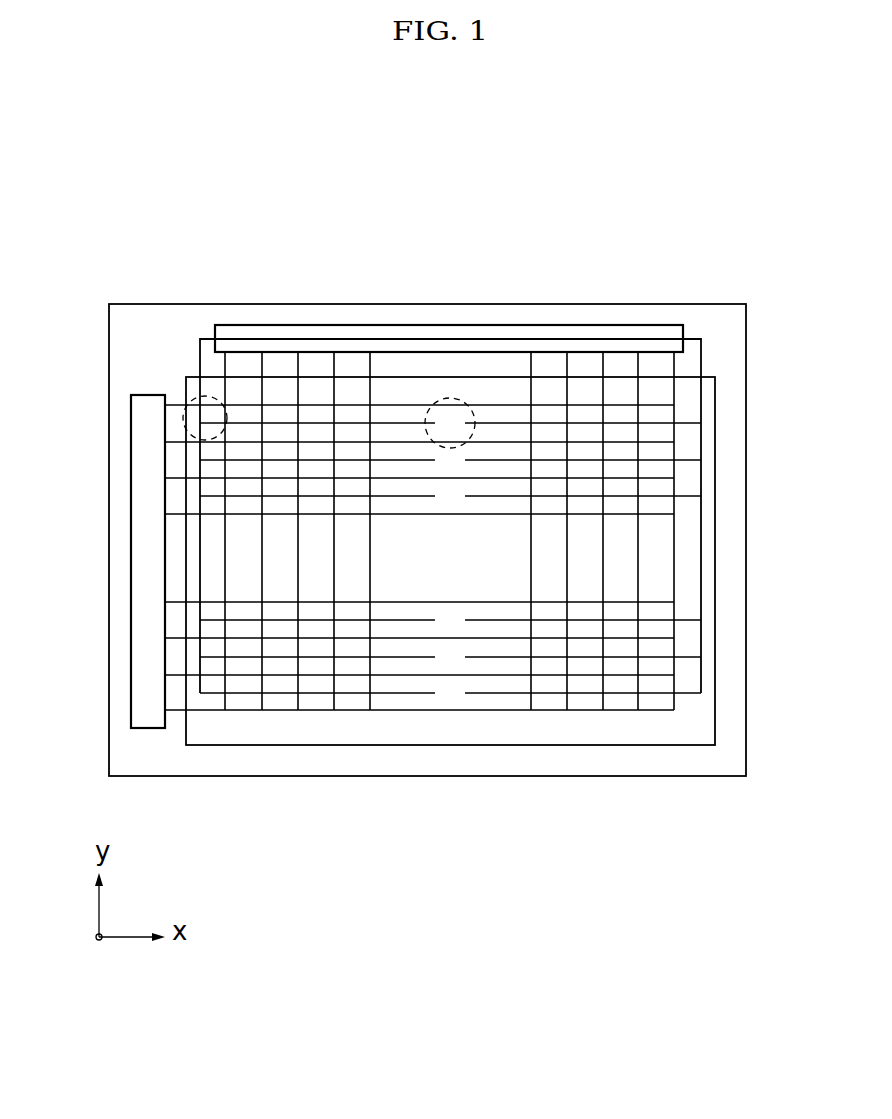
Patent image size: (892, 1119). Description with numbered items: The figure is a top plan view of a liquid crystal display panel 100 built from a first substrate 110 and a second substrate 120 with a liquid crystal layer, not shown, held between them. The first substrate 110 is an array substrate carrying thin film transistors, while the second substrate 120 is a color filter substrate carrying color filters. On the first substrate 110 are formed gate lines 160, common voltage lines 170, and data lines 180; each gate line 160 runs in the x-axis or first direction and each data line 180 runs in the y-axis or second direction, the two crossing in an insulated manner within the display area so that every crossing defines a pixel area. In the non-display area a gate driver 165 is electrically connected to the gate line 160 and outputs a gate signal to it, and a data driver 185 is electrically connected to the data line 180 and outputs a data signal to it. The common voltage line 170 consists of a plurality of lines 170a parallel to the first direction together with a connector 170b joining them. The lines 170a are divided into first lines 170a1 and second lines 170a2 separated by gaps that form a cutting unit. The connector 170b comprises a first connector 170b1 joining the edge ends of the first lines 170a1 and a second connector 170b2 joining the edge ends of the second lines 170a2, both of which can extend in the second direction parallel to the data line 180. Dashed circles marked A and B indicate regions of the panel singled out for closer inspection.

The liquid crystal display panel 100 is at (465, 167).
The first substrate 110 is at (747, 685).
The second substrate 120 is at (715, 723).
The gate line 160 is at (665, 513).
The gate driver 165 is at (148, 728).
The common voltage line 170 is at (466, 569).
The lines 170a is at (449, 456).
The first lines 170a1 is at (400, 418).
The second lines 170a2 is at (490, 420).
The connector 170b is at (432, 665).
The first connector 170b1 is at (200, 687).
The second connector 170b2 is at (675, 700).
The data line 180 is at (675, 567).
The data driver 185 is at (651, 325).
The enlarged region A is at (467, 455).
The enlarged region B is at (188, 395).